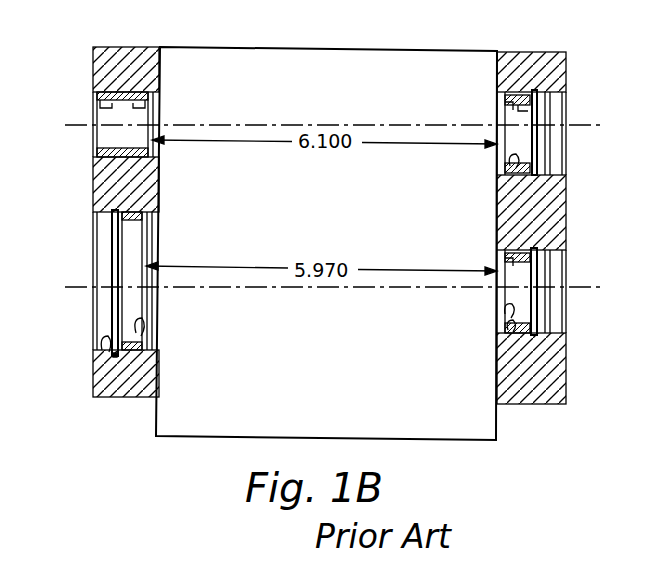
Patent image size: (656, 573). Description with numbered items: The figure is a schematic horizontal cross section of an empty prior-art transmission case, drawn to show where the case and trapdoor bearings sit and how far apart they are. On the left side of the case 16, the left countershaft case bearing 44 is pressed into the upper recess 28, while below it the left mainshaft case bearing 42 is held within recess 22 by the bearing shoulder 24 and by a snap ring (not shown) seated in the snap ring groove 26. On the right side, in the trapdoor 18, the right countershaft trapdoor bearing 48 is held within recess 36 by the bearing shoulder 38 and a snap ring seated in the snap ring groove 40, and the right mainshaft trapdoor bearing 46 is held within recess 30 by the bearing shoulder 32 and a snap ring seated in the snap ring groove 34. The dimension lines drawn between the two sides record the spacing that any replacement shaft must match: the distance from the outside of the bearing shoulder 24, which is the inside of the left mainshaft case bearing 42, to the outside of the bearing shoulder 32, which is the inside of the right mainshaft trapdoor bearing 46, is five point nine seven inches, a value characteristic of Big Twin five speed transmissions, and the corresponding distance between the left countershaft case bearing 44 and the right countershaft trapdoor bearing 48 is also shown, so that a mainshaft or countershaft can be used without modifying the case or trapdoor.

The left bearing housing 16 is at (113, 192).
The right bearing housing 18 is at (545, 218).
The recess 22 is at (102, 237).
The bearing shoulder 24 is at (148, 225).
The snap ring groove 26 is at (100, 344).
The recess 28 is at (146, 112).
The recess 30 is at (500, 337).
The bearing shoulder 32 is at (498, 258).
The snap ring groove 34 is at (538, 260).
The recess 36 is at (502, 170).
The bearing shoulder 38 is at (498, 109).
The snap ring groove 40 is at (540, 97).
The left mainshaft case bearing 42 is at (150, 331).
The left countershaft case bearing 44 is at (98, 114).
The right mainshaft trapdoor bearing 46 is at (502, 308).
The right countershaft trapdoor bearing 48 is at (522, 119).